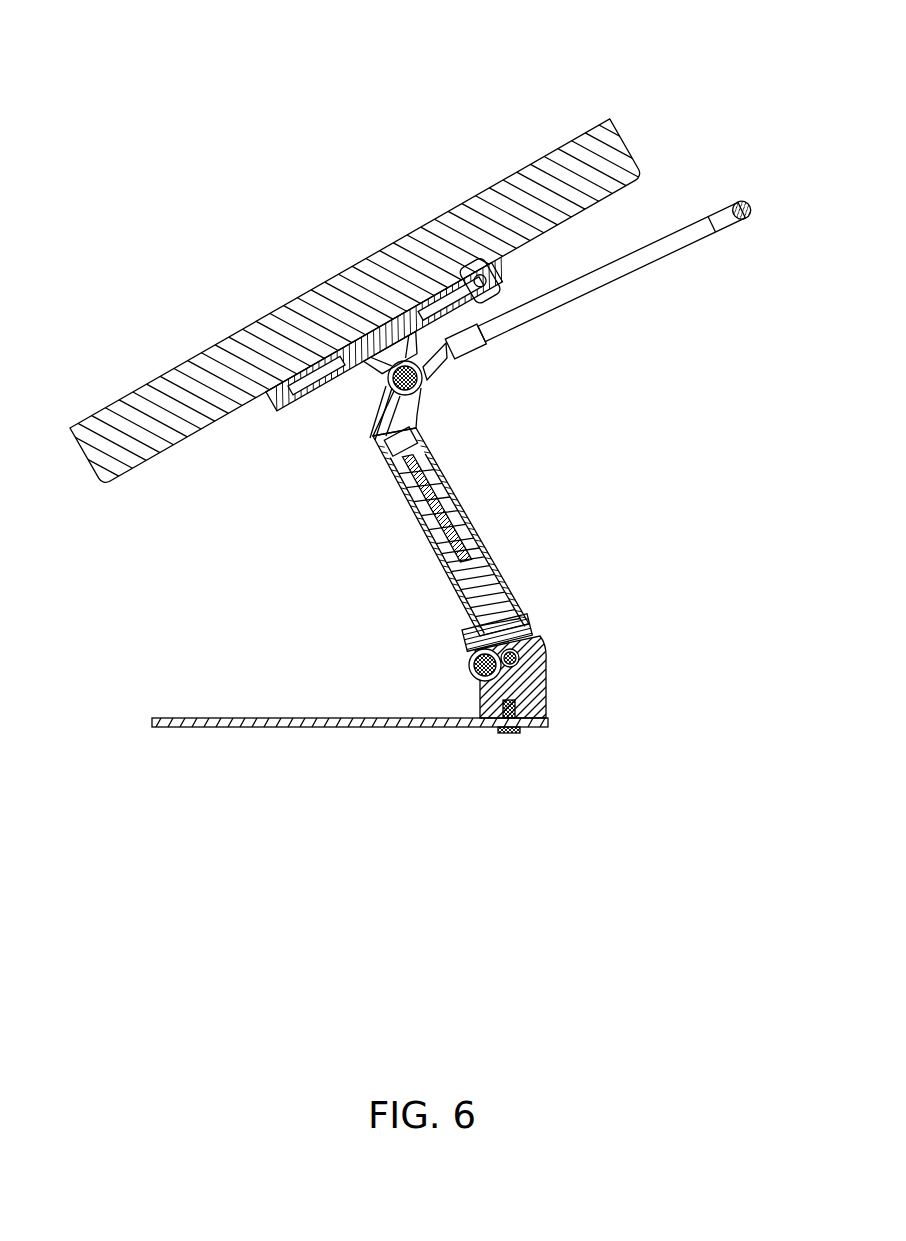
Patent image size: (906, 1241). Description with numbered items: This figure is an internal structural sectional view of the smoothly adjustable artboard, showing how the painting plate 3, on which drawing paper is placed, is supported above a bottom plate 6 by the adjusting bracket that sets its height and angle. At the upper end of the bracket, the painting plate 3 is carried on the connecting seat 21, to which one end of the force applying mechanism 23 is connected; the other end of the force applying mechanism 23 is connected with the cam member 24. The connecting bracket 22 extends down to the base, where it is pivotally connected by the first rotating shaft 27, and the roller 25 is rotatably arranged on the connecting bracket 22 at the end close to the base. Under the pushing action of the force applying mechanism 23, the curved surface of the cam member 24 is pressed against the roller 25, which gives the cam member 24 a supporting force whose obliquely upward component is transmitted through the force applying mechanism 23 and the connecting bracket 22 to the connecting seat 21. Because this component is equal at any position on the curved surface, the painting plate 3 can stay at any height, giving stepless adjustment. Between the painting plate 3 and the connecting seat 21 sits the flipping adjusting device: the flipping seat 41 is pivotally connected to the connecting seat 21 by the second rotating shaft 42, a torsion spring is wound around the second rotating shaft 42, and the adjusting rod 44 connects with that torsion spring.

The painting plate 3 is at (410, 267).
The bottom plate 6 is at (313, 722).
The connecting seat 21 is at (428, 438).
The connecting bracket 22 is at (473, 520).
The force applying mechanism 23 is at (430, 543).
The cam member 24 is at (522, 610).
The roller 25 is at (478, 678).
The first rotating shaft 27 is at (542, 647).
The flipping seat 41 is at (293, 398).
The second rotating shaft 42 is at (378, 440).
The adjusting rod 44 is at (578, 292).